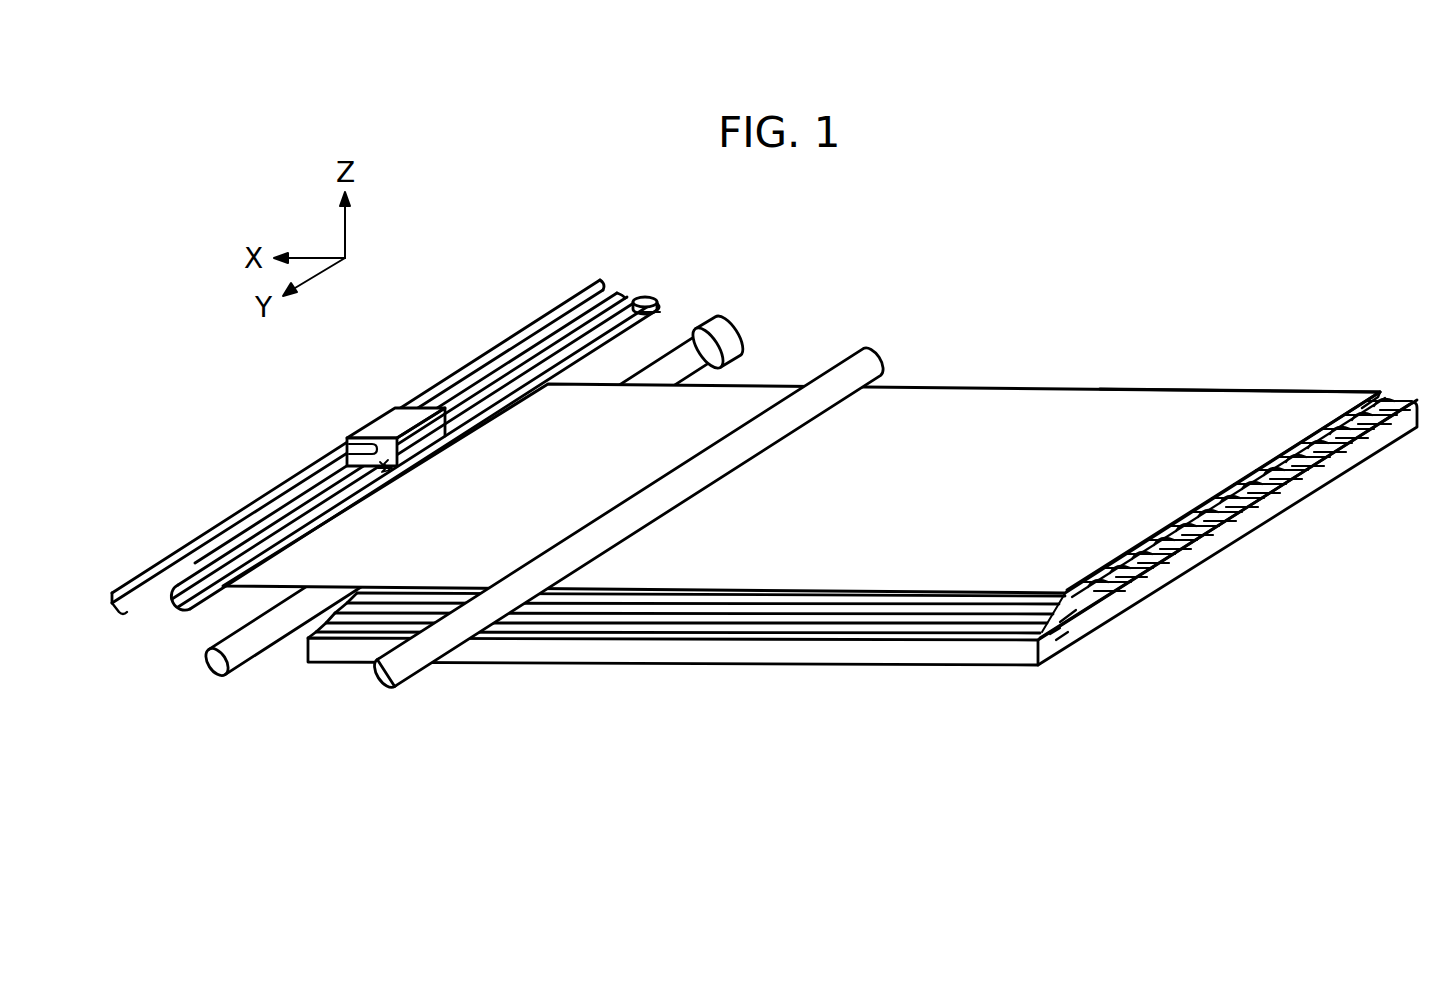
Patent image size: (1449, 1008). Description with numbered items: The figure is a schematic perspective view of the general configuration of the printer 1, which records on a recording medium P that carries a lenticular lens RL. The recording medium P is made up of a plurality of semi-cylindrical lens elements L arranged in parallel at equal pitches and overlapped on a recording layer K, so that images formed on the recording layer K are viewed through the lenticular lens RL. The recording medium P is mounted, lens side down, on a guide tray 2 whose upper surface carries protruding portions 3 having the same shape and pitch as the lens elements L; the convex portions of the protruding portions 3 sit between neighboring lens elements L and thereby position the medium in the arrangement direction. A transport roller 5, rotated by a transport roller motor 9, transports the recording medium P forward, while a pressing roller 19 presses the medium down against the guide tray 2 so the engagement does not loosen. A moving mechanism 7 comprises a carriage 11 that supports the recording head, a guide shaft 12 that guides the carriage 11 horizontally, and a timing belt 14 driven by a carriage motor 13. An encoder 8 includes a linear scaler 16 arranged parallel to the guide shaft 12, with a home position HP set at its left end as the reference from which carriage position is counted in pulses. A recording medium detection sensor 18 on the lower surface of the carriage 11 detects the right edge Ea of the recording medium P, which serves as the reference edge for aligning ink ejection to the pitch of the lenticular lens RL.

The printer 1 is at (968, 296).
The guide tray 2 is at (832, 657).
The protruding portions 3 is at (1230, 545).
The transport roller 5 is at (246, 668).
The moving mechanism 7 is at (420, 449).
The encoder 8 is at (300, 460).
The transport roller motor 9 is at (734, 340).
The carriage 11 is at (386, 416).
The guide shaft 12 is at (128, 617).
The carriage motor 13 is at (650, 294).
The timing belt 14 is at (660, 309).
The linear scaler 16 is at (122, 591).
The recording medium detection sensor 18 is at (394, 470).
The pressing roller 19 is at (879, 356).
The home position HP is at (165, 549).
The recording medium P is at (1186, 396).
The right edge of the recording medium Ea is at (1284, 392).
The recording layer K is at (1380, 393).
The lens elements L is at (1370, 438).
The lenticular lens RL is at (1306, 470).